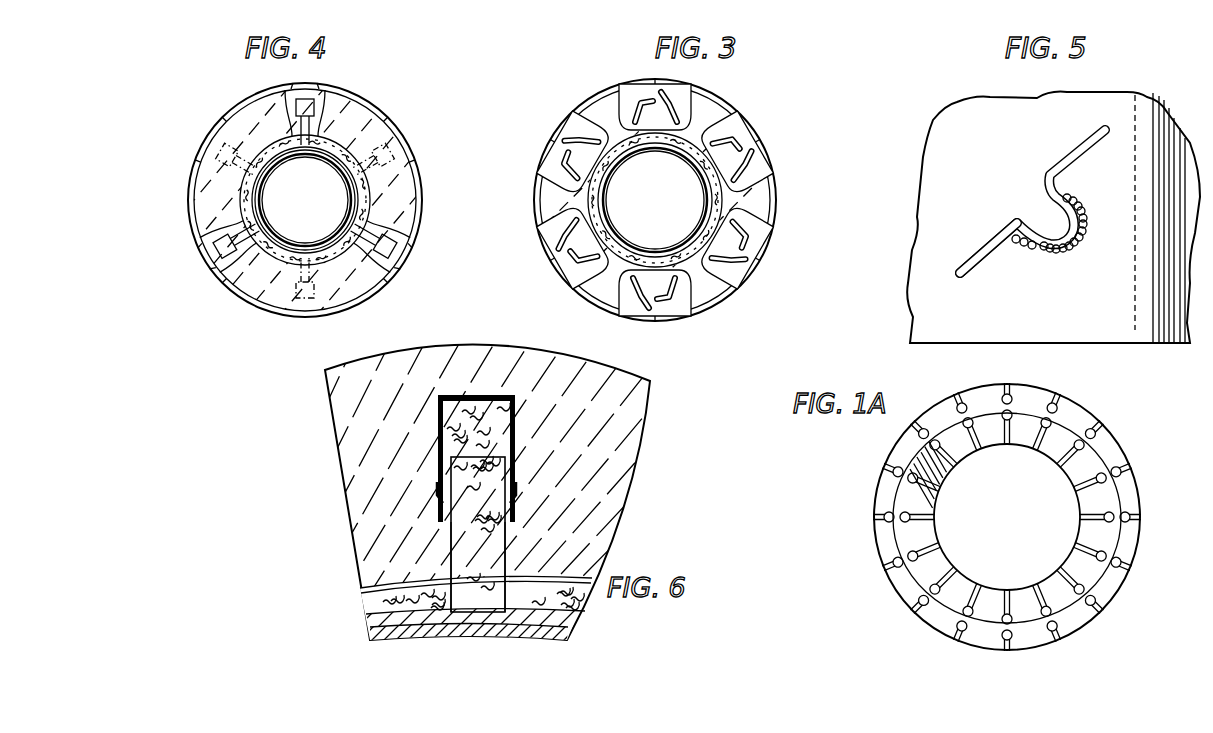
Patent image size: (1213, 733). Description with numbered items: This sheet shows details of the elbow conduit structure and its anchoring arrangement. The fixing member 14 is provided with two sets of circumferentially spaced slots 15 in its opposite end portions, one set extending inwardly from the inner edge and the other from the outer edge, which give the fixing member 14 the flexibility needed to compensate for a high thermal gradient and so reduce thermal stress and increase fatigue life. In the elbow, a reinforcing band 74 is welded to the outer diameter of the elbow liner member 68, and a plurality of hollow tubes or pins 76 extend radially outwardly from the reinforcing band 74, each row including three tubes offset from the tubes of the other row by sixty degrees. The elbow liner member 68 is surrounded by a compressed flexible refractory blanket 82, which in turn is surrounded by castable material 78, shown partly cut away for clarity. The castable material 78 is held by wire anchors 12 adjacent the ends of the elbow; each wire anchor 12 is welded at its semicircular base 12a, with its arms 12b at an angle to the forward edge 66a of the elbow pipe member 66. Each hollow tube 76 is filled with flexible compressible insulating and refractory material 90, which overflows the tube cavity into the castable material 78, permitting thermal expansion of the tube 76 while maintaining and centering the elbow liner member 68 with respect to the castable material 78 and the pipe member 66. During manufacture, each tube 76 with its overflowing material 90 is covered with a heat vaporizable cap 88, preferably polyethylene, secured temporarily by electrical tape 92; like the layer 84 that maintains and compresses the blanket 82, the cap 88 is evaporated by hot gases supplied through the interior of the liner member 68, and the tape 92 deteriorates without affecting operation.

In FIG. 3, the wire anchor 12 is at (676, 200).
In FIG. 5, the wire anchor 12 is at (1040, 172).
In FIG. 5, the semicircular base 12a is at (1090, 236).
In FIG. 5, the arms 12b is at (983, 243).
In FIG. 1A, the fixing member 14 is at (981, 517).
In FIG. 1A, the slots 15 is at (982, 517).
In FIG. 4, the elbow pipe member 66 is at (327, 200).
In FIG. 5, the forward edge 66a is at (1080, 345).
In FIG. 4, the elbow liner member 68 is at (305, 200).
In FIG. 3, the elbow liner member 68 is at (655, 200).
In FIG. 6, the elbow liner member 68 is at (370, 640).
In FIG. 4, the reinforcing band 74 is at (344, 173).
In FIG. 6, the reinforcing band 74 is at (377, 618).
In FIG. 4, the hollow tube or pin 76 is at (328, 178).
In FIG. 6, the hollow tube or pin 76 is at (452, 535).
In FIG. 4, the castable material 78 is at (320, 199).
In FIG. 3, the castable material 78 is at (654, 199).
In FIG. 6, the castable material 78 is at (348, 477).
In FIG. 4, the compressed flexible refractory blanket 82 is at (256, 200).
In FIG. 6, the compressed flexible refractory blanket 82 is at (380, 602).
In FIG. 6, the layer 84 is at (380, 582).
In FIG. 6, the heat vaporizable cap 88 is at (503, 393).
In FIG. 6, the flexible refractory material 90 is at (510, 543).
In FIG. 6, the electrical tape 92 is at (518, 490).